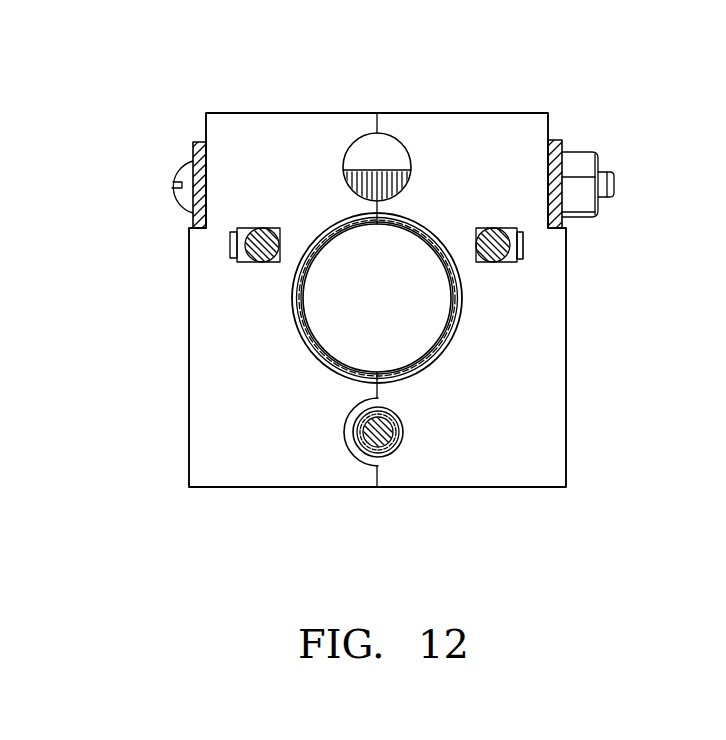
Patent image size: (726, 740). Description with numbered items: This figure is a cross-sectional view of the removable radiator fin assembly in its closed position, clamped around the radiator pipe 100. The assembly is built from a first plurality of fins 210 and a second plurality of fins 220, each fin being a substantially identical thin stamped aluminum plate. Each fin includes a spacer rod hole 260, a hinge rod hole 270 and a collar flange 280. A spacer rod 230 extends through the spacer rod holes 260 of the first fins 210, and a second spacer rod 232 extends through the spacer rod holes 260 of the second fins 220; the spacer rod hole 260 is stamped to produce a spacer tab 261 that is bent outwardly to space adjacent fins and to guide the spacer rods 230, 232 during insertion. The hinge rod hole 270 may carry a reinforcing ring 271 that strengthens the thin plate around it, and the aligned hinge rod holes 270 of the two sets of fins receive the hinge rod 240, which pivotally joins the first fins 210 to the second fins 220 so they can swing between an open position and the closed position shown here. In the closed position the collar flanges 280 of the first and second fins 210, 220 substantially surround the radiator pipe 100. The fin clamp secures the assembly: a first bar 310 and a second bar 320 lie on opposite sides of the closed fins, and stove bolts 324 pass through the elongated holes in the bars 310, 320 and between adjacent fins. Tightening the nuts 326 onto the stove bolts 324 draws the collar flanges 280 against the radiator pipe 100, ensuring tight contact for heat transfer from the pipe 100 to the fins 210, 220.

The radiator pipe 100 is at (445, 330).
The first plurality of fins 210 is at (500, 133).
The second plurality of fins 220 is at (270, 125).
The spacer rod 230 is at (488, 235).
The second spacer rod 232 is at (255, 237).
The hinge rod 240 is at (388, 453).
The spacer rod hole 260 is at (277, 262).
The spacer tab 261 is at (230, 248).
The hinge rod hole 270 is at (397, 443).
The reinforcing ring 271 is at (405, 430).
The collar flange 280 is at (303, 348).
The first bar 310 is at (560, 140).
The second bar 320 is at (193, 142).
The stove bolt 324 is at (178, 178).
The nut 326 is at (598, 215).